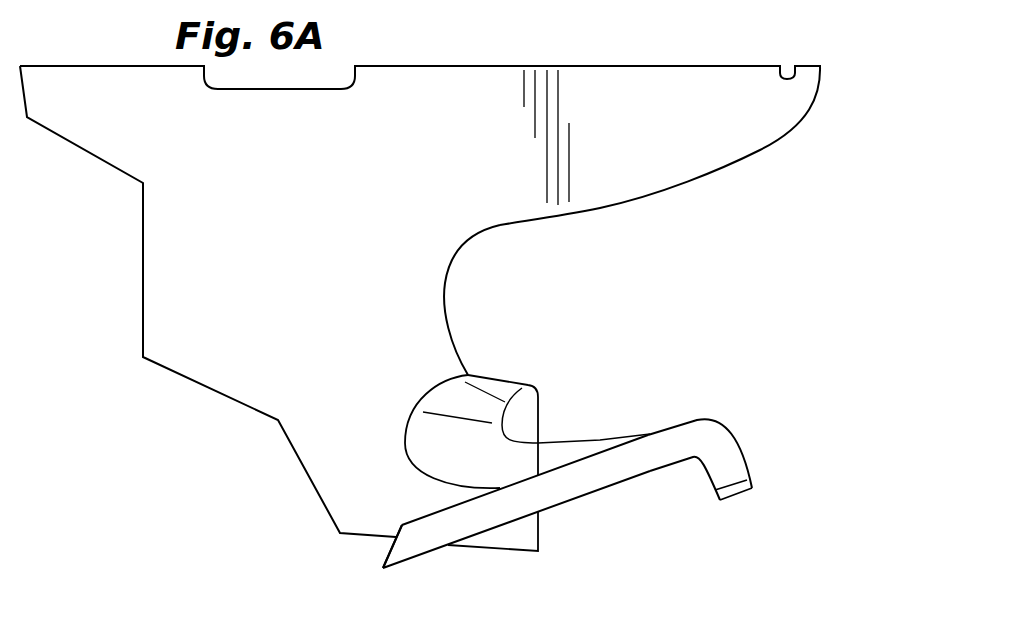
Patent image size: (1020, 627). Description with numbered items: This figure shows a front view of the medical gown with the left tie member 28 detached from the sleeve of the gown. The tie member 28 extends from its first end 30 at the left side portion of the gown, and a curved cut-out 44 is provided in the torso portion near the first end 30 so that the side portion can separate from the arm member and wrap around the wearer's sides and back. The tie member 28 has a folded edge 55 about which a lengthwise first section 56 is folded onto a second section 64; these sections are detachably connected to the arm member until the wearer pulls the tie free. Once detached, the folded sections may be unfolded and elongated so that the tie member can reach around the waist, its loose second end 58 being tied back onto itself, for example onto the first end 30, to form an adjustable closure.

The tie member 28 is at (668, 435).
The first end 30 is at (487, 393).
The curved cut-out 44 is at (458, 355).
The folded edge 55 is at (737, 498).
The first section 56 is at (558, 498).
The second end 58 is at (403, 560).
The second section 64 is at (557, 453).